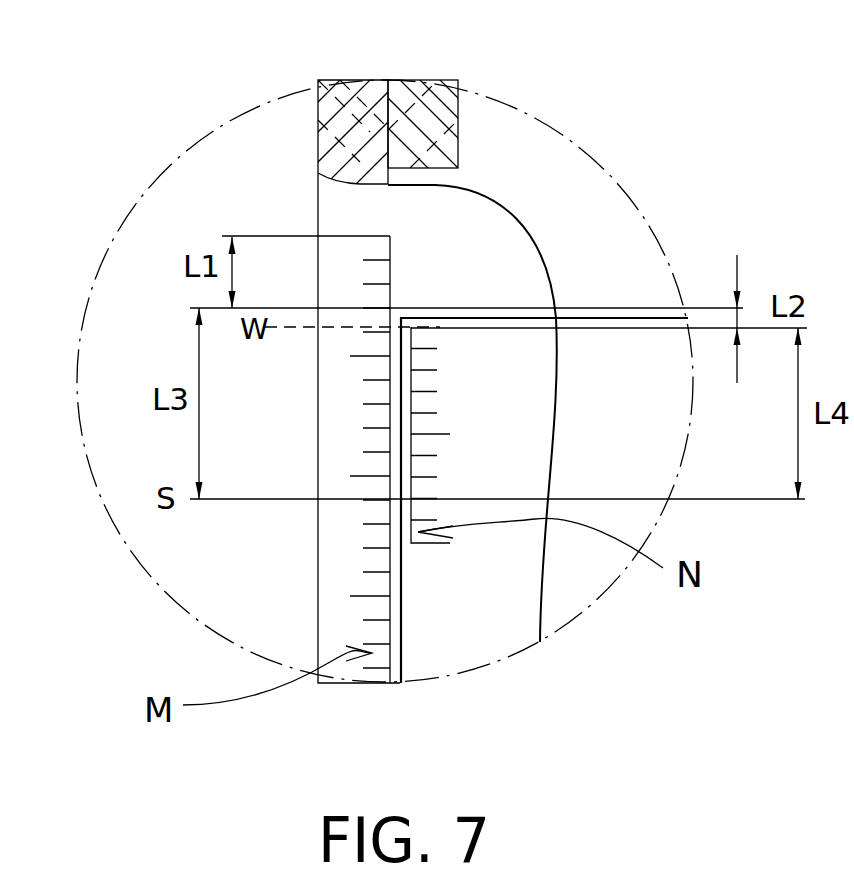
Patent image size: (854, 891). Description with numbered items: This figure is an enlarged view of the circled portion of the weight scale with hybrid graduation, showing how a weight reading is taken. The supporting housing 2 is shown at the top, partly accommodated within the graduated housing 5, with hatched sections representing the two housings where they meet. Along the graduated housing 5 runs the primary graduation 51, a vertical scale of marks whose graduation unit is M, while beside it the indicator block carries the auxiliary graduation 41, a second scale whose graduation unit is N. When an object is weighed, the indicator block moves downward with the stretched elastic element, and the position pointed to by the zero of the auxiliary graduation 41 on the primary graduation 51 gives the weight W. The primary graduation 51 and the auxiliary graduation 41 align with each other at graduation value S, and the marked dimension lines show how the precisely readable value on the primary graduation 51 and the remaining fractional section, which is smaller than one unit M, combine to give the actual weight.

The supporting housing 2 is at (437, 110).
The graduated housing 5 is at (337, 116).
The auxiliary graduation 41 is at (428, 435).
The primary graduation 51 is at (378, 548).